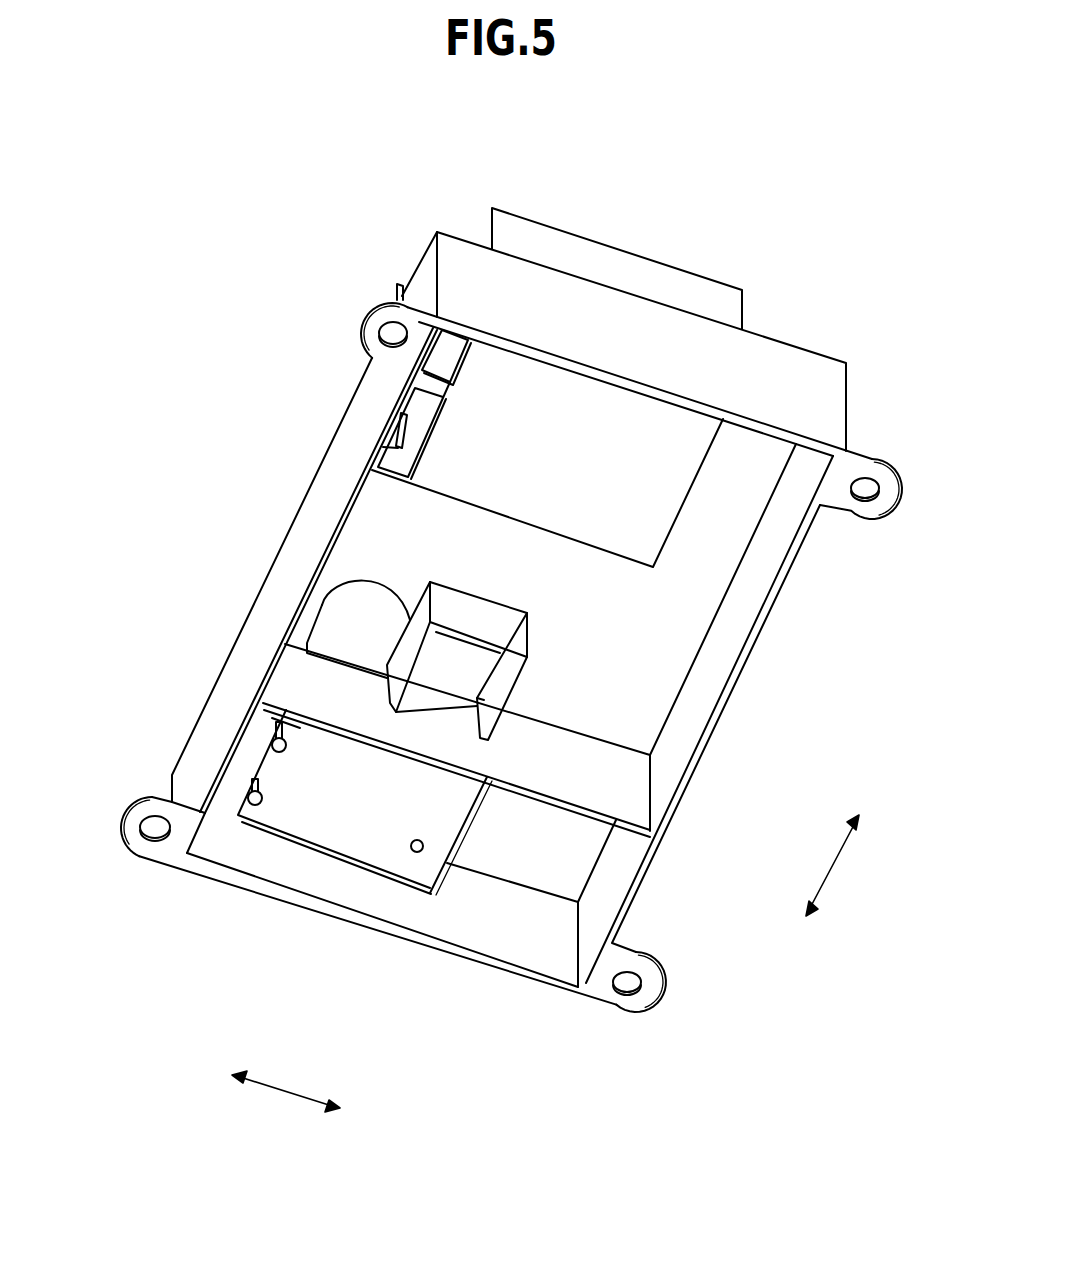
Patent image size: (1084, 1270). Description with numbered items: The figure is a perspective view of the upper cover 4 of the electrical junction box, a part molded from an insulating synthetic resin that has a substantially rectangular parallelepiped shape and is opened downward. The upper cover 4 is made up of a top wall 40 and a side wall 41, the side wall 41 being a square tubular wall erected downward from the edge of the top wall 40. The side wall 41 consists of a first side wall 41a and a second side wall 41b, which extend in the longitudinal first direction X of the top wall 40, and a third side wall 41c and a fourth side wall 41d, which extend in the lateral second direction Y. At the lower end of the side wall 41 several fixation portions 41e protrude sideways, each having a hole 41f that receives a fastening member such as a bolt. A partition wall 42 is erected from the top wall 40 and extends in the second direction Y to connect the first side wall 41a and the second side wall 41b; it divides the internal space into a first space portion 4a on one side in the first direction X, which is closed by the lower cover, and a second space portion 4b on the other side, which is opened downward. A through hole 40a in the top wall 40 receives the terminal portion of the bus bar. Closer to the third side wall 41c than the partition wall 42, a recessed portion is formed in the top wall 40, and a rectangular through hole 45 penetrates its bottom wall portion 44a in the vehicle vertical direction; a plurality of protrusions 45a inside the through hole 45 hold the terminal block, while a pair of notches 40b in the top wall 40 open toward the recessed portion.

The upper cover 4 is at (392, 172).
The first space portion 4a is at (670, 597).
The second space portion 4b is at (560, 866).
The top wall 40 is at (645, 700).
The through hole 40a is at (436, 356).
The notches 40b is at (374, 584).
The side wall 41 is at (343, 480).
The first side wall 41a is at (302, 548).
The second side wall 41b is at (748, 663).
The third side wall 41c is at (486, 968).
The fourth side wall 41d is at (690, 350).
The fixation portions 41e is at (372, 329).
The hole 41f is at (866, 500).
The partition wall 42 is at (573, 817).
The bottom wall portion 44a is at (218, 818).
The through hole 45 is at (254, 800).
The protrusions 45a is at (268, 742).